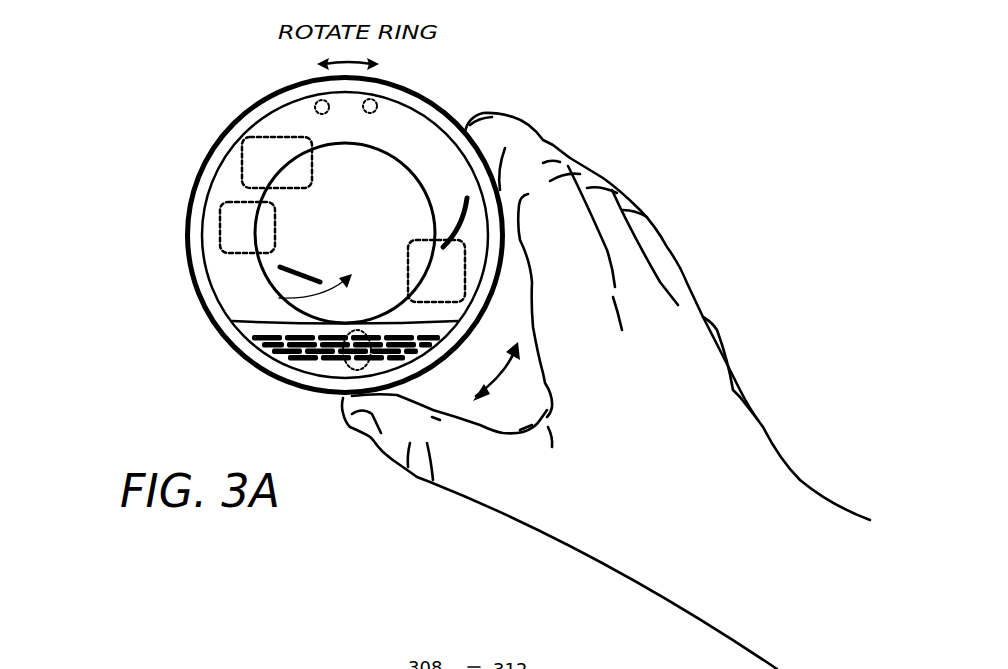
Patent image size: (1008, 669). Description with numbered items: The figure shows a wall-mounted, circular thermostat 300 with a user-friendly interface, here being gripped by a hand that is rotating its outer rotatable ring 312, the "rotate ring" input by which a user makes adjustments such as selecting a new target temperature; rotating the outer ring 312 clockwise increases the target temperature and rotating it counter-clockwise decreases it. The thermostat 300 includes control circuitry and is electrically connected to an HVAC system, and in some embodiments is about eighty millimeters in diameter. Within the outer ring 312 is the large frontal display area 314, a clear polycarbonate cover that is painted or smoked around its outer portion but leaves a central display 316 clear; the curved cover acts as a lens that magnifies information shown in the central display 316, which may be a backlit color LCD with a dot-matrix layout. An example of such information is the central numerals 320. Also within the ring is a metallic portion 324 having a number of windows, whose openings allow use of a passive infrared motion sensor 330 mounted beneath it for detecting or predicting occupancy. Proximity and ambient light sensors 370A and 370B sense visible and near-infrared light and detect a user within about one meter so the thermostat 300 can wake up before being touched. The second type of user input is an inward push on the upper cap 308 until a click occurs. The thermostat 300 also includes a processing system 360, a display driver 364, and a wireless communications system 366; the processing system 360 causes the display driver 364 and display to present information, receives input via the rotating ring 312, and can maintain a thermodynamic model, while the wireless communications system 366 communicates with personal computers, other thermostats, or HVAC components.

The thermostat 300 is at (153, 57).
The upper cap 308 is at (217, 263).
The outer rotatable ring 312 is at (413, 100).
The frontal display area 314 is at (410, 136).
The central display 316 is at (372, 198).
The central numerals 320 is at (279, 298).
The metallic portion 324 is at (308, 366).
The passive infrared motion sensor 330 is at (352, 362).
The processing system 360 is at (435, 240).
The display driver 364 is at (220, 217).
The wireless communications system 366 is at (242, 170).
The proximity and ambient light sensor 370A is at (315, 108).
The proximity and ambient light sensor 370B is at (363, 103).